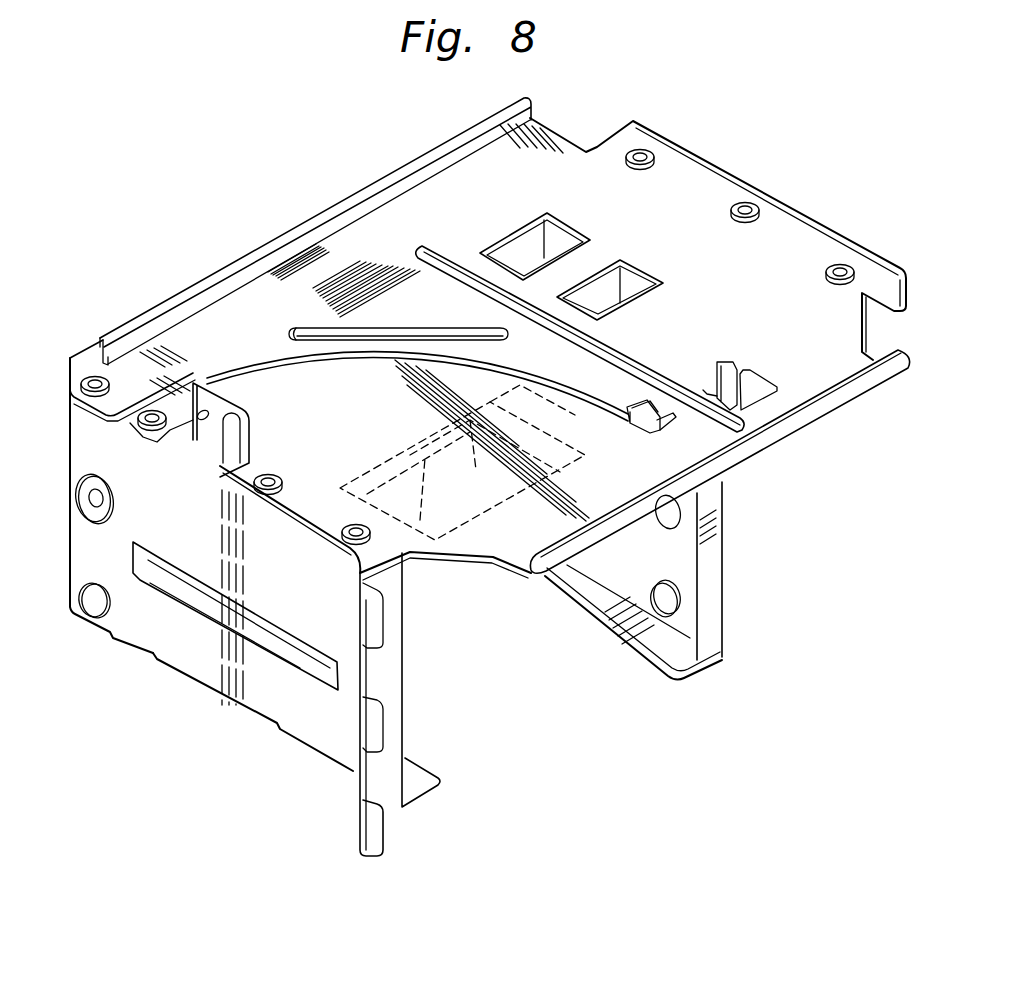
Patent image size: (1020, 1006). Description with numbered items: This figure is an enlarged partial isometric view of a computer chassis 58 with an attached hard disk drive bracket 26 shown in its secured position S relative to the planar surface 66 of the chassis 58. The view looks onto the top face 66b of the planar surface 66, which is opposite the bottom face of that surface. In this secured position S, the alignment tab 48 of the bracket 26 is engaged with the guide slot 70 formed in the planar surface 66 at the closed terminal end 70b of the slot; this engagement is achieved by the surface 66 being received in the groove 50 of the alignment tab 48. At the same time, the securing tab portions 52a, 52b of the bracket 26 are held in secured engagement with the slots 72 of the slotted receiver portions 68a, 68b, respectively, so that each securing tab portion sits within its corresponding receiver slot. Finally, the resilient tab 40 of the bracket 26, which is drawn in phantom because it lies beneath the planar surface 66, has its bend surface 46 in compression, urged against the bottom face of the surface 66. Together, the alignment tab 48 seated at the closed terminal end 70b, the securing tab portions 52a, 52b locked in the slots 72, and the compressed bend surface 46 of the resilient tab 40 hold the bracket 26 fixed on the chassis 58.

The chassis 58 is at (660, 94).
The top face 66b is at (377, 240).
The slots 72 is at (515, 240).
The securing tab portion 52b is at (495, 253).
The slotted receiver portion 68b is at (547, 240).
The slotted receiver portion 68a is at (640, 290).
The securing tab portion 52a is at (593, 310).
The alignment tab 48 is at (648, 410).
The guide slot 70 is at (278, 364).
The closed terminal end 70b is at (655, 432).
The groove 50 is at (663, 425).
The resilient tab 40 is at (396, 450).
The bend surface 46 is at (452, 470).
The planar surface 66 is at (445, 556).
The secured position S is at (68, 565).
The bracket 26 is at (220, 711).